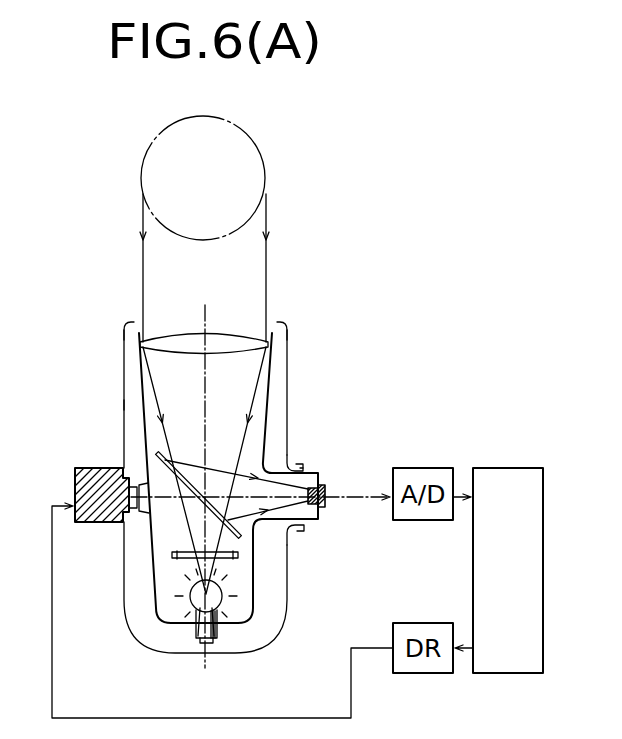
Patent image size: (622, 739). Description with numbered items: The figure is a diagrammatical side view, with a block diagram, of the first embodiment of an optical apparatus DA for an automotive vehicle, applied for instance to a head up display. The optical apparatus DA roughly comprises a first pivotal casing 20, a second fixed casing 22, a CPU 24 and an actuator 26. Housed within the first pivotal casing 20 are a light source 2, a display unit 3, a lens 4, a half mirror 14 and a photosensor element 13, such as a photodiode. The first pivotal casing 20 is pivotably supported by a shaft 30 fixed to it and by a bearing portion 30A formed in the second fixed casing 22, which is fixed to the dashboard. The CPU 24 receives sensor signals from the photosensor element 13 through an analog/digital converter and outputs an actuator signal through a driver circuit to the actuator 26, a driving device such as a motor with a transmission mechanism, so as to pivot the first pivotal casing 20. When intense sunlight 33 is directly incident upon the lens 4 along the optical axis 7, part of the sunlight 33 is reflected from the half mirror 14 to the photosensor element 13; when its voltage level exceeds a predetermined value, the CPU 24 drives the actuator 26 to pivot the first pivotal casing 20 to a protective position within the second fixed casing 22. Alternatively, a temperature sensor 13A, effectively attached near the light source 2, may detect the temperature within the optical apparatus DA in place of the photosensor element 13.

The sunlight 33 is at (267, 253).
The lens 4 is at (242, 335).
The optical axis 7 is at (207, 390).
The first pivotal casing 20 is at (139, 387).
The second fixed casing 22 is at (124, 406).
The optical apparatus DA is at (165, 368).
The half mirror 14 is at (158, 455).
The actuator 26 is at (75, 482).
The shaft 30 is at (131, 513).
The bearing portion 30A is at (298, 468).
The photosensor element 13 is at (366, 467).
The temperature sensor 13A is at (324, 486).
The display unit 3 is at (238, 557).
The light source 2 is at (195, 632).
The CPU 24 is at (535, 492).